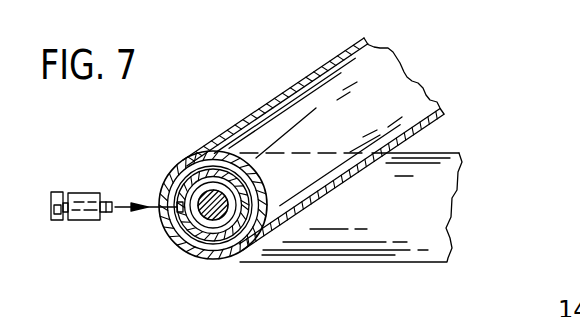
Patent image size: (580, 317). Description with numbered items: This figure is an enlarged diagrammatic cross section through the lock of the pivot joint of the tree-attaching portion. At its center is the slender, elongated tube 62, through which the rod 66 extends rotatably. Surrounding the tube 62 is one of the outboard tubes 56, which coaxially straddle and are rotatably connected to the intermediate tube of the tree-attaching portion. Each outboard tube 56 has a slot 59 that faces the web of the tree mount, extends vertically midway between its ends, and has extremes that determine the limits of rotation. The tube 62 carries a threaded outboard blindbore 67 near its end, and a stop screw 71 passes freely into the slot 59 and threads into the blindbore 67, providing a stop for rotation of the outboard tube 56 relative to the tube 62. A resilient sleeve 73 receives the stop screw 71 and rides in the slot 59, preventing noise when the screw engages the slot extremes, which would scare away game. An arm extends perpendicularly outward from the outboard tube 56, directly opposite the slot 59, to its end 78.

The outboard tube 56 is at (186, 158).
The slot 59 is at (176, 170).
The tube 62 is at (185, 232).
The rod 66 is at (213, 217).
The threaded outboard blindbore 67 is at (172, 212).
The stop screw 71 is at (78, 191).
The resilient sleeve 73 is at (86, 191).
The end 78 is at (348, 258).